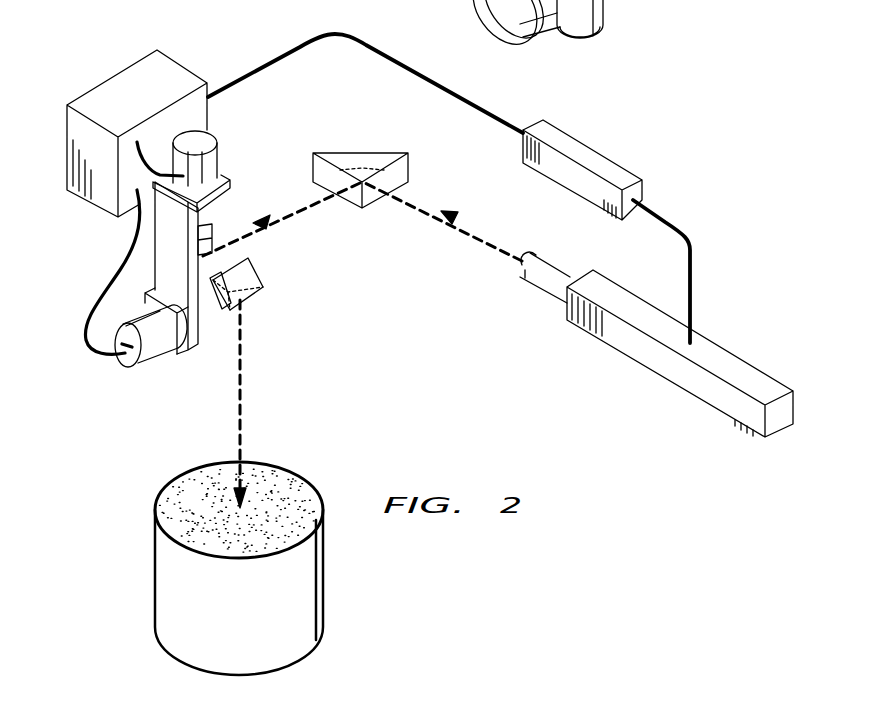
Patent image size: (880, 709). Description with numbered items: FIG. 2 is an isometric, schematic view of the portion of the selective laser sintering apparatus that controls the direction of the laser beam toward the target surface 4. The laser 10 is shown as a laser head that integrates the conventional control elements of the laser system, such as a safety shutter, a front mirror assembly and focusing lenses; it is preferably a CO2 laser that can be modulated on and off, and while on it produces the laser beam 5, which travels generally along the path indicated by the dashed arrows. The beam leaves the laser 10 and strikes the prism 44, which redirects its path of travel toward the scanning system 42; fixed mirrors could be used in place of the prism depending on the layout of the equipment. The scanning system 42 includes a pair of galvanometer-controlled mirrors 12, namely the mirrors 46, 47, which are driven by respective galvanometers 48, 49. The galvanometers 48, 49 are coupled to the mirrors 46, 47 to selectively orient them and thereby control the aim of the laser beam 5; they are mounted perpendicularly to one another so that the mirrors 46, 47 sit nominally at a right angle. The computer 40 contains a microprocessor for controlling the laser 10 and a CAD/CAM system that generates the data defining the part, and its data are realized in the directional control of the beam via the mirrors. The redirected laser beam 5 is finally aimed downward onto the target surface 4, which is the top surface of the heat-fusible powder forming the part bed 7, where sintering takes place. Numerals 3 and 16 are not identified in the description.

The controller 3 is at (98, 90).
The target surface 4 is at (174, 490).
The laser beam 5 is at (243, 375).
The part bed 7 is at (325, 588).
The laser 10 is at (642, 355).
The galvanometer-controlled mirrors 12 is at (278, 260).
The light source 16 is at (607, 9).
The computer 40 is at (587, 151).
The scanning system 42 is at (180, 49).
The prism 44 is at (406, 167).
The mirror 46 is at (212, 246).
The mirror 47 is at (262, 291).
The galvanometer 48 is at (213, 141).
The galvanometer 49 is at (128, 366).